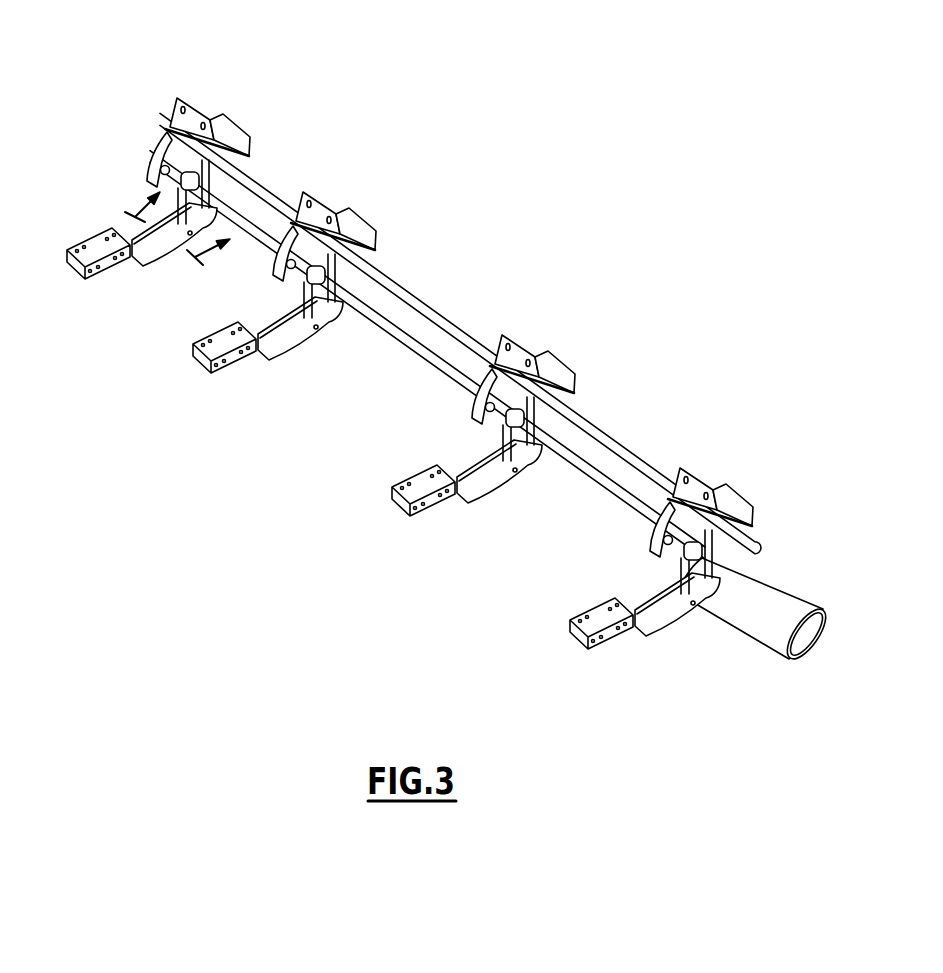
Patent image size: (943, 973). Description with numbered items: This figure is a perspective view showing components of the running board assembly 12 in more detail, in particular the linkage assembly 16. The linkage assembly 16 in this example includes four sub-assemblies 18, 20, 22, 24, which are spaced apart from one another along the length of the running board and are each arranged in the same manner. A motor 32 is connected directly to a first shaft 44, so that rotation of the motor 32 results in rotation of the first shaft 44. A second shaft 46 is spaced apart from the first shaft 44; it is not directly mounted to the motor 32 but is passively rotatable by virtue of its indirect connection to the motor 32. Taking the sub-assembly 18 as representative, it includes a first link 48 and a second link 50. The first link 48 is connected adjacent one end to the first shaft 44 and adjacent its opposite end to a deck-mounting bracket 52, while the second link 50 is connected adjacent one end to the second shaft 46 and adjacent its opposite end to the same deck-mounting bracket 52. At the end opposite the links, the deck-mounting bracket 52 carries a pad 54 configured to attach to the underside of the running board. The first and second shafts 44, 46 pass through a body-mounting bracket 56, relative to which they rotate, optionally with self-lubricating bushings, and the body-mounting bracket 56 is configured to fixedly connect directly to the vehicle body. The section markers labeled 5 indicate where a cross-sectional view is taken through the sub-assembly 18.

The running board assembly 12 is at (439, 439).
The linkage assembly 16 is at (439, 361).
The sub-assembly 18 is at (193, 178).
The sub-assembly 20 is at (371, 177).
The sub-assembly 22 is at (566, 320).
The sub-assembly 24 is at (749, 452).
The motor 32 is at (762, 625).
The first shaft 44 is at (445, 365).
The second shaft 46 is at (612, 445).
The first link 48 is at (156, 131).
The second link 50 is at (220, 177).
The deck-mounting bracket 52 is at (162, 252).
The pad 54 is at (119, 262).
The body-mounting bracket 56 is at (240, 127).
The section line 5- 5 is at (167, 245).